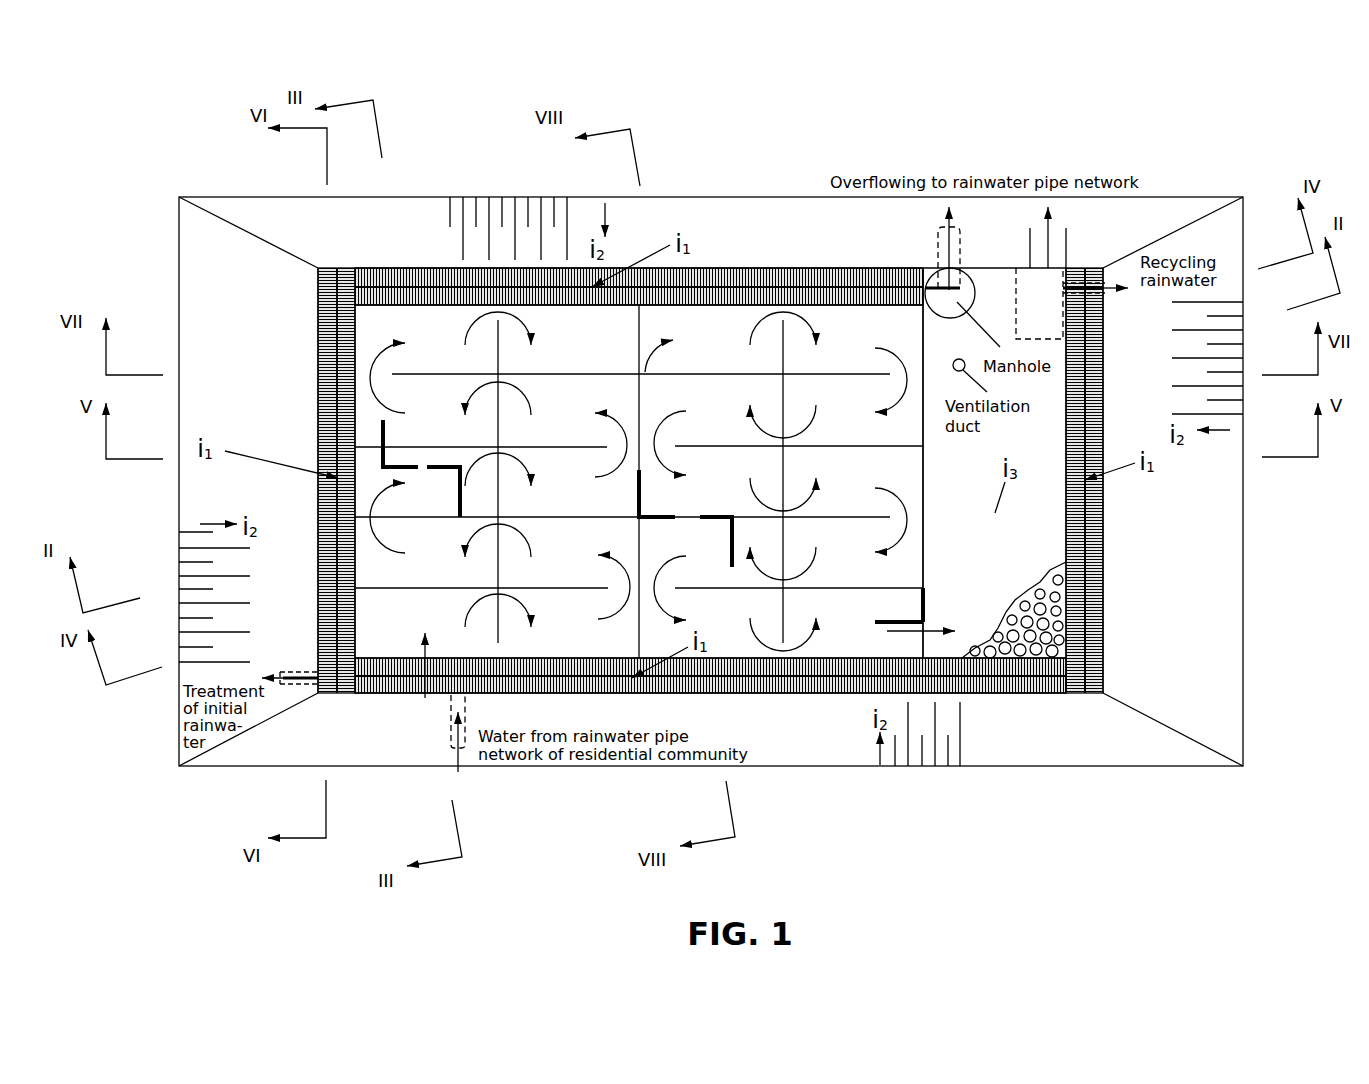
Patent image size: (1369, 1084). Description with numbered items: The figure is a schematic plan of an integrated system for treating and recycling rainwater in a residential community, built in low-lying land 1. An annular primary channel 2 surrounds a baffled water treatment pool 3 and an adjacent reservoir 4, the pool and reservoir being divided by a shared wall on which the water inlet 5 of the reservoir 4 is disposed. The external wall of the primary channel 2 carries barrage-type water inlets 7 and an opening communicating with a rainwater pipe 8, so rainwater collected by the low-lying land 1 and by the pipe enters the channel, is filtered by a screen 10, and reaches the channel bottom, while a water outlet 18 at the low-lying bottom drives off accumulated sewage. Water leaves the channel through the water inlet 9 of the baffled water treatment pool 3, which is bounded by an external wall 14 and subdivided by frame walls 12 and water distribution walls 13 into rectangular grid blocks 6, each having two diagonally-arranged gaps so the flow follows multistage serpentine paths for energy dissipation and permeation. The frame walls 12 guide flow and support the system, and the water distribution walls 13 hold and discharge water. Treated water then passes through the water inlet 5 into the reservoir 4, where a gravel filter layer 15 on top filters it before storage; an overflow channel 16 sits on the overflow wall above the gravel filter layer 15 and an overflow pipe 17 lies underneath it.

The low-lying land 1 is at (822, 750).
The primary channel 2 is at (827, 678).
The baffled water treatment pool 3 is at (832, 640).
The reservoir 4 is at (970, 528).
The water inlet 5 is at (927, 635).
The grid blocks 6 is at (540, 575).
The barrage-type water inlets 7 is at (320, 518).
The rainwater pipe 8 is at (450, 733).
The water inlet 9 is at (418, 658).
The screen 10 is at (355, 446).
The frame walls 12 is at (452, 446).
The water distribution walls 13 is at (447, 374).
The external wall 14 is at (892, 305).
The gravel filter layer 15 is at (1027, 593).
The overflow channel 16 is at (1063, 248).
The overflow pipe 17 is at (938, 243).
The water outlet 18 is at (288, 672).